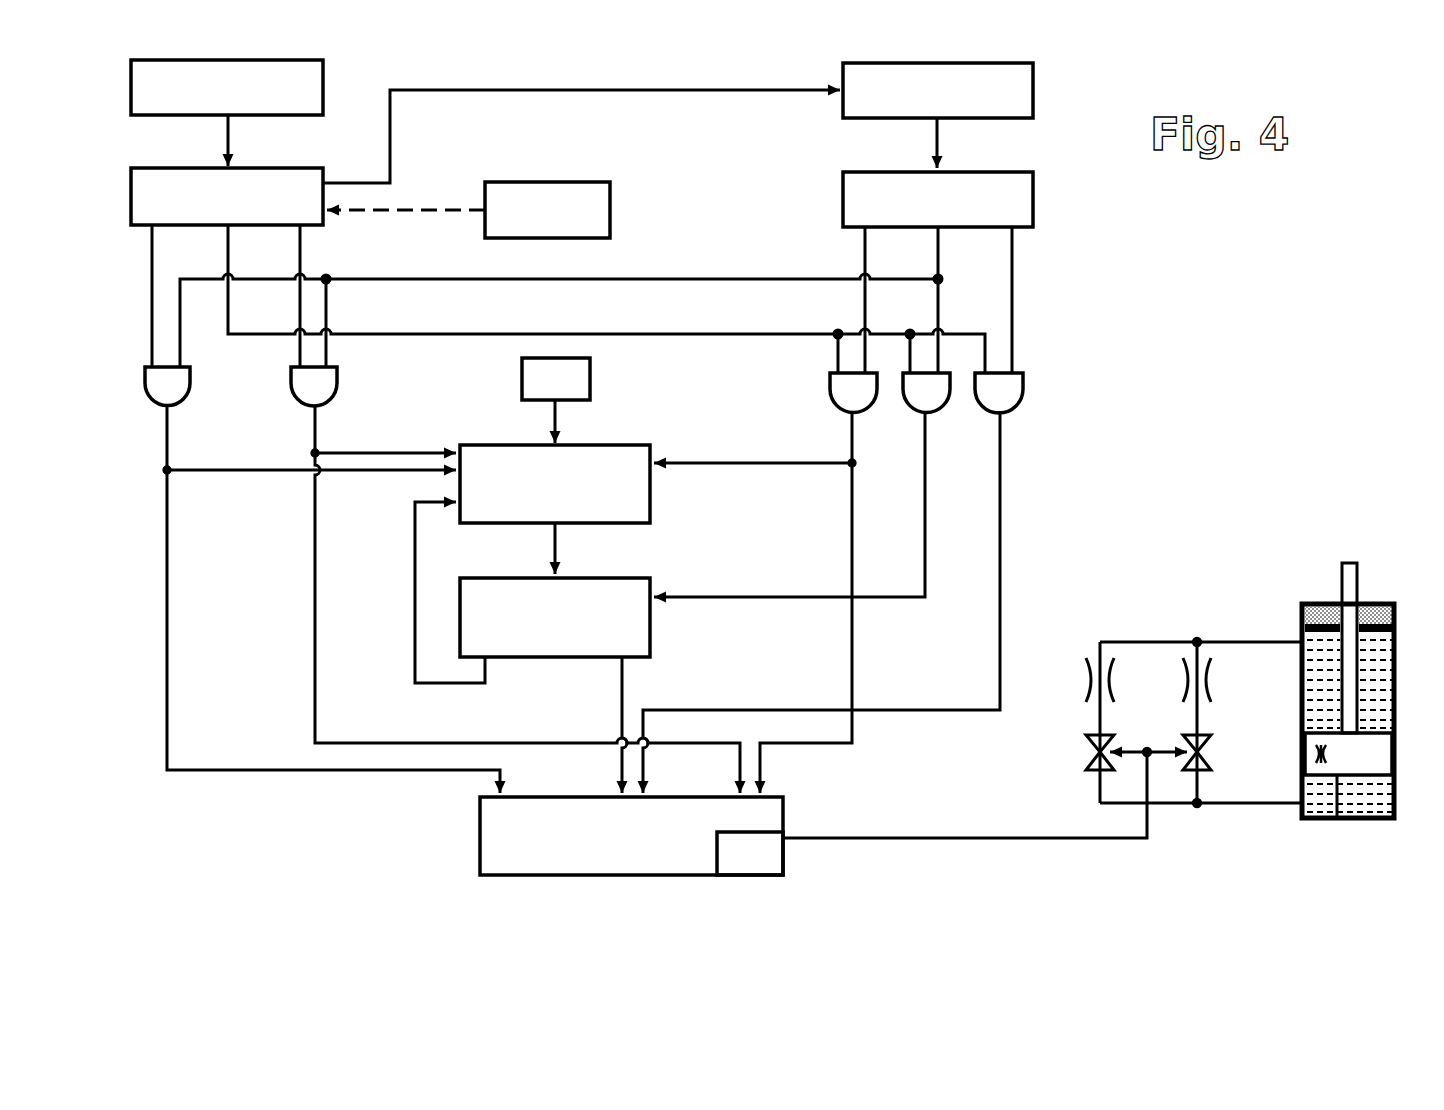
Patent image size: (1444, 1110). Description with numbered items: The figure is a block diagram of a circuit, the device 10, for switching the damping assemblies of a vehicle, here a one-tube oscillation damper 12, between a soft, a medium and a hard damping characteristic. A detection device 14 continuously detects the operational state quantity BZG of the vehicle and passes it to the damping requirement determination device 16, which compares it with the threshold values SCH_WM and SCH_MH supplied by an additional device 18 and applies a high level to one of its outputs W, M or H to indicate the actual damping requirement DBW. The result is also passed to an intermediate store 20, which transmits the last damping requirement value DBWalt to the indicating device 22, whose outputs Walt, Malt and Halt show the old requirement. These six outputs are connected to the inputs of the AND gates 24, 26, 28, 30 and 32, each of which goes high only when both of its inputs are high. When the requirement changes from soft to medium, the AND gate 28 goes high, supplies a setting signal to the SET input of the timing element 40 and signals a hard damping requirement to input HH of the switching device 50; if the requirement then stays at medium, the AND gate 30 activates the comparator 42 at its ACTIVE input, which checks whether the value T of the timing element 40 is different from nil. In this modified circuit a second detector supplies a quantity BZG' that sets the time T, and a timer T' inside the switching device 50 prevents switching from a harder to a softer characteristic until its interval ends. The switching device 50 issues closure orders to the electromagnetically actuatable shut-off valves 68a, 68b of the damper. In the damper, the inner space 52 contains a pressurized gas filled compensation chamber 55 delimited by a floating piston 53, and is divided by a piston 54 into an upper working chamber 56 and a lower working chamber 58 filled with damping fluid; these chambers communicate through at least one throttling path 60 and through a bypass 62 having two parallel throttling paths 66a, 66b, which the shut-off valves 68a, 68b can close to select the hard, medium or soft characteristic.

The device 10 is at (1118, 350).
The oscillation damper 12 is at (1292, 600).
The detection device 14 is at (165, 70).
The damping requirement determination device 16 is at (140, 170).
The additional device 18 is at (560, 195).
The intermediate store 20 is at (1033, 96).
The indicating device 22 is at (1033, 194).
The AND gate 24 is at (180, 394).
The AND gate 26 is at (329, 394).
The AND gate 28 is at (858, 397).
The AND gate 30 is at (933, 397).
The AND gate 32 is at (1008, 397).
The timing element 40 is at (608, 445).
The comparator 42 is at (542, 642).
The switching device 50 is at (480, 846).
The inner space 52 is at (1388, 666).
The floating piston 53 is at (1380, 600).
The piston 54 is at (1376, 756).
The compensation chamber 55 is at (1326, 600).
The upper working chamber 56 is at (1380, 710).
The lower working chamber 58 is at (1378, 802).
The throttling path 60 is at (1336, 820).
The bypass 62 is at (1254, 642).
The throttling path 66a is at (1088, 682).
The throttling path 66b is at (1212, 680).
The shut-off valve 68a is at (1088, 763).
The shut-off valve 68b is at (1210, 758).